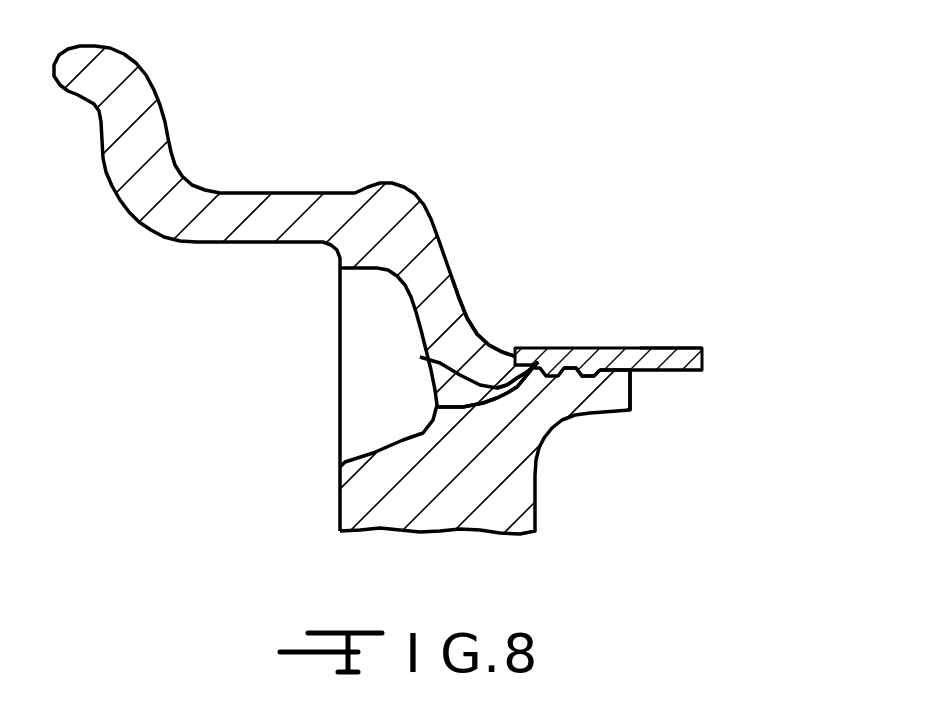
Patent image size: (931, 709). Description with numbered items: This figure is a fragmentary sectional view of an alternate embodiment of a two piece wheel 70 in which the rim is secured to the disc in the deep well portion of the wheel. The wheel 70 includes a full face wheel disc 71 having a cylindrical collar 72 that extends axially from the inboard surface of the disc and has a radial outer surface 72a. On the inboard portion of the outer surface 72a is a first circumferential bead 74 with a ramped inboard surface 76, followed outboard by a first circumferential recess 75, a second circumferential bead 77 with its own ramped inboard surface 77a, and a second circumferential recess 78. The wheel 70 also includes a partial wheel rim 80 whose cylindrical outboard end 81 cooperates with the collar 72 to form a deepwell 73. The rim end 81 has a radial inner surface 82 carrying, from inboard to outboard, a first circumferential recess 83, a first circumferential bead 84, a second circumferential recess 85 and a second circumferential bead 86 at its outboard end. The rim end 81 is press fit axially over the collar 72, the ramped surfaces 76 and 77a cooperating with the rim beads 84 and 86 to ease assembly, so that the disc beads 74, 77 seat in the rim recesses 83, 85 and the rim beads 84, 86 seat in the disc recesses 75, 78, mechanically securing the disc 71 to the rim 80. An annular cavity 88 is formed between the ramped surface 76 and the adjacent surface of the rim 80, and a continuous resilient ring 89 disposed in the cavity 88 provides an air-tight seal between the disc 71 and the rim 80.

The two piece wheel 70 is at (588, 118).
The full face wheel disc 71 is at (137, 251).
The cylindrical collar 72 is at (598, 416).
The radial outer surface 72a is at (633, 378).
The deepwell 73 is at (607, 230).
The first circumferential bead 74 is at (597, 385).
The first circumferential recess 75 is at (565, 365).
The ramped inboard surface 76 is at (605, 382).
The second circumferential bead 77 is at (440, 406).
The ramped inboard surface 77a is at (560, 365).
The second circumferential recess 78 is at (420, 357).
The partial wheel rim 80 is at (704, 346).
The cylindrical outboard end 81 is at (730, 326).
The radial inner surface 82 is at (692, 381).
The first circumferential recess 83 is at (587, 357).
The first circumferential bead 84 is at (568, 357).
The second circumferential recess 85 is at (545, 357).
The second circumferential bead 86 is at (533, 355).
The annular cavity 88 is at (661, 346).
The continuous ring 89 is at (603, 357).